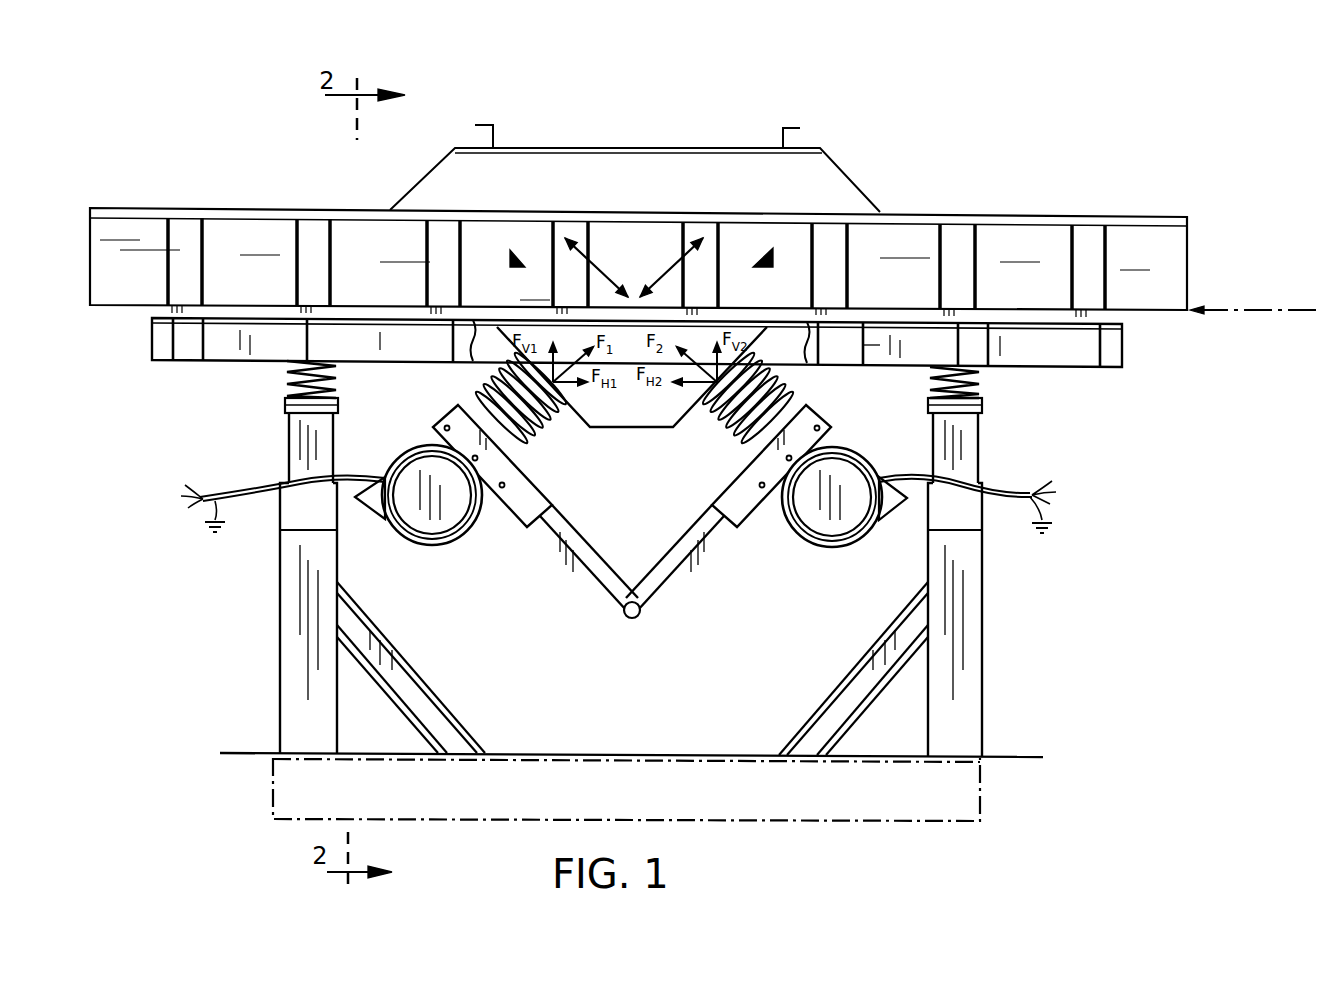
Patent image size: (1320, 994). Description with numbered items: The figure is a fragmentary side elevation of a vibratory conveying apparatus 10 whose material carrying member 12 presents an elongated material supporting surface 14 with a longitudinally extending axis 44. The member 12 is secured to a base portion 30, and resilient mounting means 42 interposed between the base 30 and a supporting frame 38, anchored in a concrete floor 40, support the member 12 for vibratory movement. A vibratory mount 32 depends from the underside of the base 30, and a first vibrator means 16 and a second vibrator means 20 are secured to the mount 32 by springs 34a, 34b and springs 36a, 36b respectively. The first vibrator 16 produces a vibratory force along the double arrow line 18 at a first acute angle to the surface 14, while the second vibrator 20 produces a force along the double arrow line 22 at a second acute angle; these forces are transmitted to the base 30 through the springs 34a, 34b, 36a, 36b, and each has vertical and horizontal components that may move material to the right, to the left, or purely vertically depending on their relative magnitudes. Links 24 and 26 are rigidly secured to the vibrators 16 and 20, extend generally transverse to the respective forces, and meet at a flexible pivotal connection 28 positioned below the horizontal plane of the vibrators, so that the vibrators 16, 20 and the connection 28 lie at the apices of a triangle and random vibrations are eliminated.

The vibratory conveying apparatus 10 is at (745, 118).
The material carrying member 12 is at (892, 205).
The material supporting surface 14 is at (900, 308).
The first vibrator means 16 is at (426, 560).
The line of first vibratory force 18 is at (597, 272).
The second vibrator means 20 is at (837, 570).
The line of second vibratory force 22 is at (682, 270).
The link 24 is at (550, 545).
The link 26 is at (700, 562).
The flexible pivotal connection 28 is at (633, 622).
The base portion 30 is at (875, 356).
The vibratory mount 32 is at (635, 418).
The spring 34a is at (470, 373).
The spring 34b is at (527, 430).
The spring 36a is at (742, 427).
The spring 36b is at (800, 380).
The supporting frame 38 is at (995, 609).
The concrete floor 40 is at (1018, 757).
The resilient mounting means 42 is at (290, 373).
The longitudinally extending axis 44 is at (1210, 318).